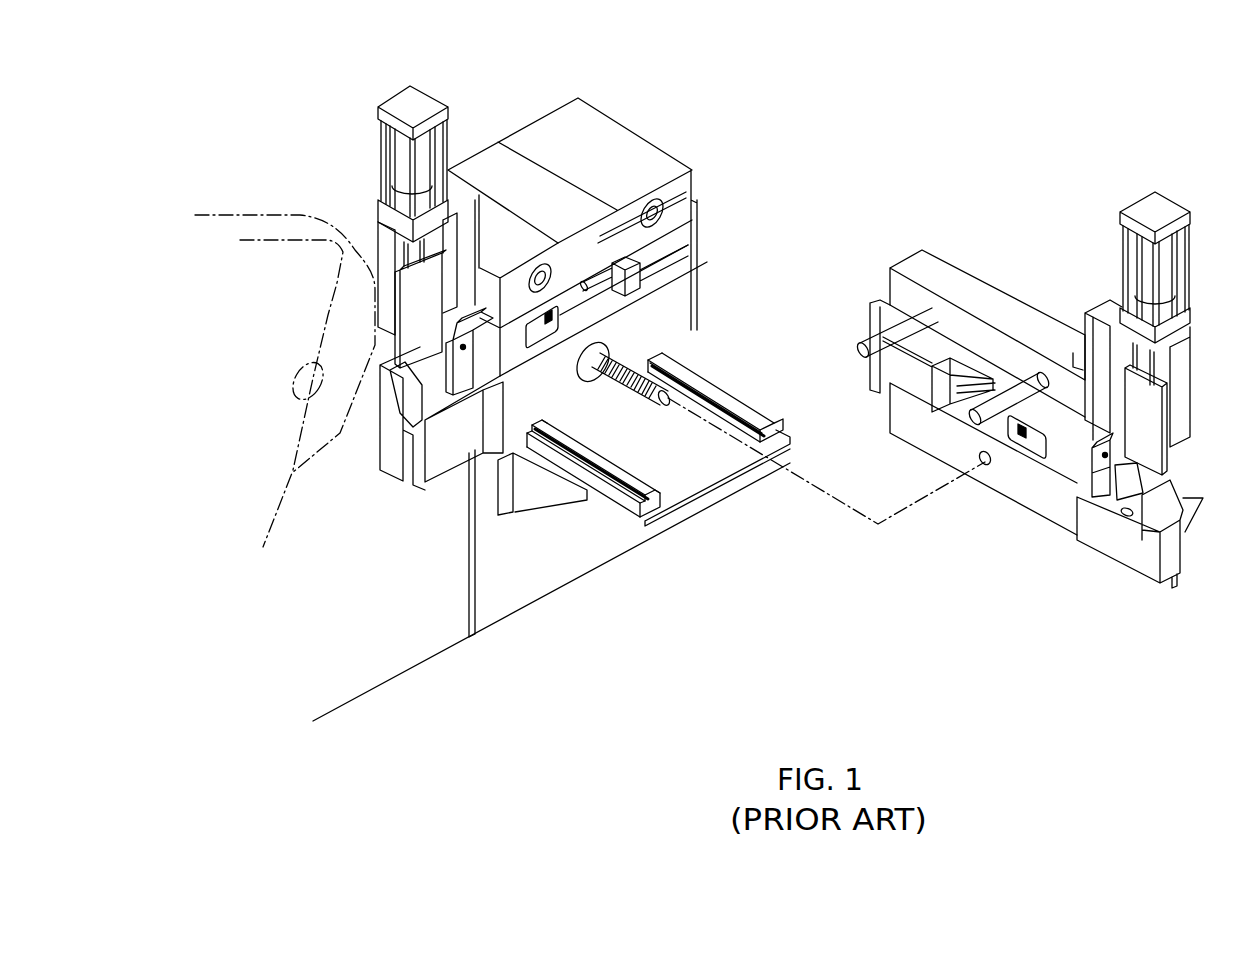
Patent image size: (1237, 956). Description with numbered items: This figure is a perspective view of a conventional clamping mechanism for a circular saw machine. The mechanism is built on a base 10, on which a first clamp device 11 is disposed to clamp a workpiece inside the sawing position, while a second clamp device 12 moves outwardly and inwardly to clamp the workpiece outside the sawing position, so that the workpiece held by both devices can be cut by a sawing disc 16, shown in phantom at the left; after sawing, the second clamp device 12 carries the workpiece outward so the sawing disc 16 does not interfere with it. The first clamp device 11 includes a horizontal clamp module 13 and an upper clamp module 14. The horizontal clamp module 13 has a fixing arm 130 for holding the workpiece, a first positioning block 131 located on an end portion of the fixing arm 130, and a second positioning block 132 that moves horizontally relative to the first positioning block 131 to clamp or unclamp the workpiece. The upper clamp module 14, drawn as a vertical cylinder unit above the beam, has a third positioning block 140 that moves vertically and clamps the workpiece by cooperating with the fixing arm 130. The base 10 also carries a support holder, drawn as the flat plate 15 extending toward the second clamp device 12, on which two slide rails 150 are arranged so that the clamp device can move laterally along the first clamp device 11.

The base 10 is at (500, 607).
The first clamp device 11 is at (684, 117).
The second clamp device 12 is at (1070, 212).
The horizontal clamp module 13 is at (575, 318).
The upper clamp module 14 is at (381, 222).
The third positioning block 140 is at (430, 298).
The fixing arm 130 is at (443, 420).
The first positioning block 131 is at (400, 404).
The second positioning block 132 is at (475, 370).
The slide plate 15 is at (712, 481).
The slide rails 150 is at (727, 394).
The sawing disc 16 is at (350, 311).